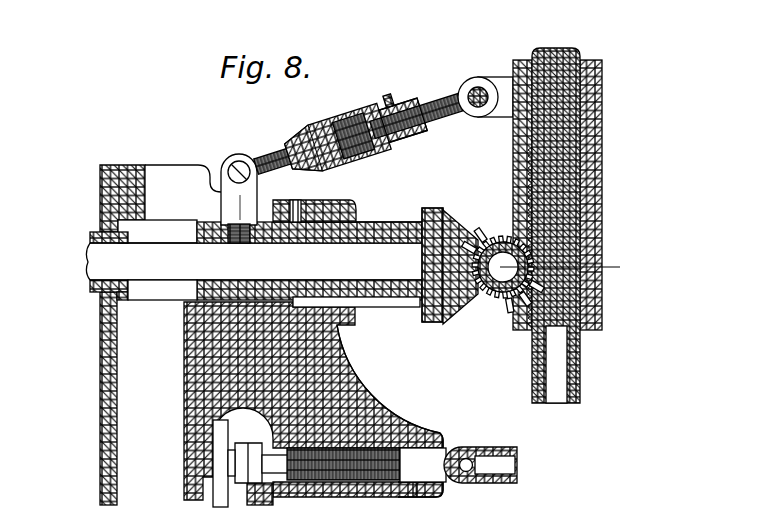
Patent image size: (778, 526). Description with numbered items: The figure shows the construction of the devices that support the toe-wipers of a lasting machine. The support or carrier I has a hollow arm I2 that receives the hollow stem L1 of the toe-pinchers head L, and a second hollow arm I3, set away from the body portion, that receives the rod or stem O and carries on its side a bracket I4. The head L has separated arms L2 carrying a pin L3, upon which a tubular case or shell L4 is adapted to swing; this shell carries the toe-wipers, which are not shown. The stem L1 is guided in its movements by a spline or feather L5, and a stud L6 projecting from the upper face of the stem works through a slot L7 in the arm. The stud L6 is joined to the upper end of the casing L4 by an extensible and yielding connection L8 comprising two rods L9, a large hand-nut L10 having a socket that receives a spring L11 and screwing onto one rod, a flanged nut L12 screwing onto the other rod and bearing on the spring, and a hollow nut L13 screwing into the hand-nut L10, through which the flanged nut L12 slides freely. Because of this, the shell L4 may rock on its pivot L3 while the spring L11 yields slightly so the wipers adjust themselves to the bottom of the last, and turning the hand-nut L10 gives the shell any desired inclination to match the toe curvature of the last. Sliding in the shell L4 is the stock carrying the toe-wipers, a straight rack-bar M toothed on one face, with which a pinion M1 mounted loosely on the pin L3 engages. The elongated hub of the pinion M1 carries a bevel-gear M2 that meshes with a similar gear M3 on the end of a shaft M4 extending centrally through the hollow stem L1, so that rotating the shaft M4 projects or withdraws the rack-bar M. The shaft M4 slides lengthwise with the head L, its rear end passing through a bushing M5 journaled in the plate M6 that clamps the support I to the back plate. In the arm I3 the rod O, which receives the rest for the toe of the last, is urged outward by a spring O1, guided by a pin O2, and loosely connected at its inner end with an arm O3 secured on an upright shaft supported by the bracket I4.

The support or carrier I is at (313, 403).
The hollow arm I2 is at (349, 212).
The second hollow arm I3 is at (416, 427).
The bracket I4 is at (213, 425).
The toe-pinchers head L is at (308, 246).
The hollow stem L1 is at (396, 222).
The separated arms L2 is at (449, 324).
The pin L3 is at (569, 271).
The tubular case or shell L4 is at (602, 108).
The spline or feather L5 is at (350, 307).
The stud L6 is at (227, 207).
The slot L7 is at (174, 168).
The extensible and yielding connection L8 is at (355, 130).
The rods L9 is at (260, 152).
The hand-nut L10 is at (308, 131).
The spring L11 is at (358, 160).
The flanged nut L12 is at (424, 107).
The hollow nut L13 is at (400, 103).
The rack-bar M is at (566, 216).
The pinion M1 is at (484, 312).
The bevel-gear M2 is at (486, 222).
The bevel-gear M3 is at (452, 210).
The shaft M4 is at (85, 268).
The bushing M5 is at (92, 236).
The plate M6 is at (100, 343).
The rod or stem O is at (457, 458).
The spring O1 is at (400, 430).
The pin O2 is at (424, 497).
The arm O3 is at (258, 488).